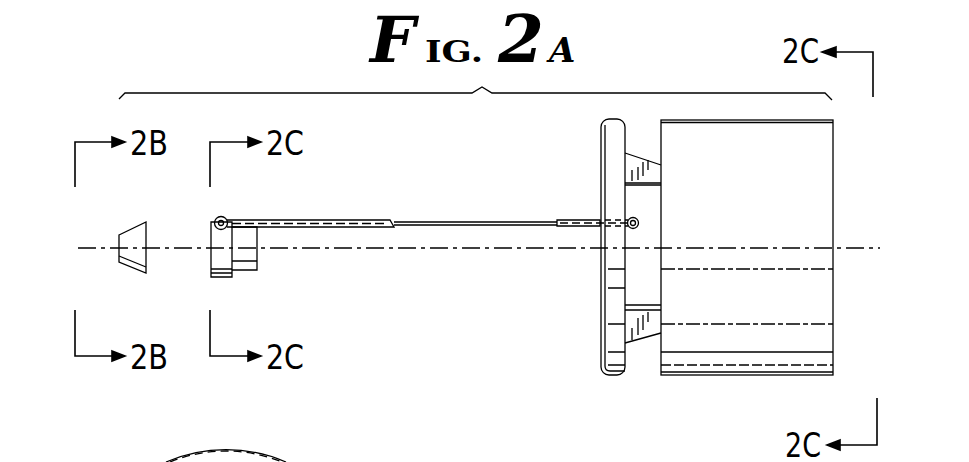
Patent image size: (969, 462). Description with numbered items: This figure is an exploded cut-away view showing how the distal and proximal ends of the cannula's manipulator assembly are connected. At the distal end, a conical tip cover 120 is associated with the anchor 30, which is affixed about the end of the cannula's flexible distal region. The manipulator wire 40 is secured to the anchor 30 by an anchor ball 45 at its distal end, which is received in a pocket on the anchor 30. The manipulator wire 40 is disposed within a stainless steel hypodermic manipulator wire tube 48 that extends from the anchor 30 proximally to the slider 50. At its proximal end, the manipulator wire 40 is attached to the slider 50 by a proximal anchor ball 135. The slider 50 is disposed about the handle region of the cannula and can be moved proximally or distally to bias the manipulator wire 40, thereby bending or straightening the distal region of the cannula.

The conical tip cover 120 is at (133, 272).
The anchor 30 is at (222, 278).
The anchor ball 45 is at (224, 216).
The manipulator wire tube 48 is at (335, 220).
The manipulator wire 40 is at (448, 221).
The proximal anchor ball 135 is at (638, 220).
The slider 50 is at (842, 161).